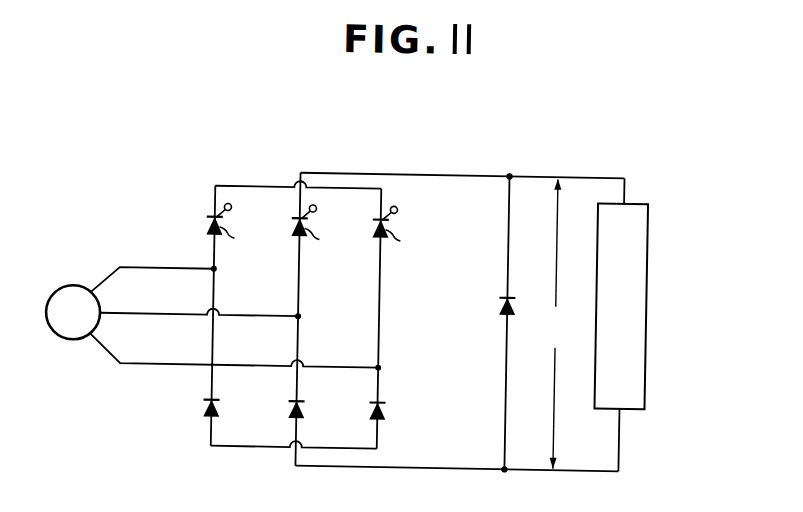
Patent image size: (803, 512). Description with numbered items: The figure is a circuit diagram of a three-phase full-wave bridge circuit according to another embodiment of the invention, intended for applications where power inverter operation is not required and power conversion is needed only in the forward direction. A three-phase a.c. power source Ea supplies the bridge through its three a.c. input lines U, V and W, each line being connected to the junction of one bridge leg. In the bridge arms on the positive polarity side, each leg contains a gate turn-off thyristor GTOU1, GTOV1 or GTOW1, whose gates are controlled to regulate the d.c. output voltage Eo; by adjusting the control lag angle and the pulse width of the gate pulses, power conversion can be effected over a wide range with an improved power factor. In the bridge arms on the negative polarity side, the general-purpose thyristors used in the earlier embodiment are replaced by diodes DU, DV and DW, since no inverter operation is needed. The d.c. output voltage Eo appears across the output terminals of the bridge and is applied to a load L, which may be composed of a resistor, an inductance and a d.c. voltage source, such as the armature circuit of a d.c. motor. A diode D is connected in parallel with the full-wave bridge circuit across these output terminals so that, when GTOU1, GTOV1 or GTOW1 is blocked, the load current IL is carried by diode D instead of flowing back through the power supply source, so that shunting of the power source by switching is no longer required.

The three phase a.c. power source Ea is at (73, 312).
The phase U a.c. input line U is at (153, 265).
The phase V a.c. input line V is at (199, 300).
The phase W a.c. input line W is at (234, 350).
The gate turn-off thyristor GTOU1 is at (252, 234).
The gate turn-off thyristor GTOV1 is at (339, 236).
The gate turn-off thyristor GTOW1 is at (426, 237).
The diode DU is at (206, 412).
The diode DV is at (291, 412).
The diode DW is at (373, 412).
The diode D is at (516, 300).
The load current IL is at (534, 161).
The d.c. output voltage Eo is at (552, 323).
The load L is at (643, 206).